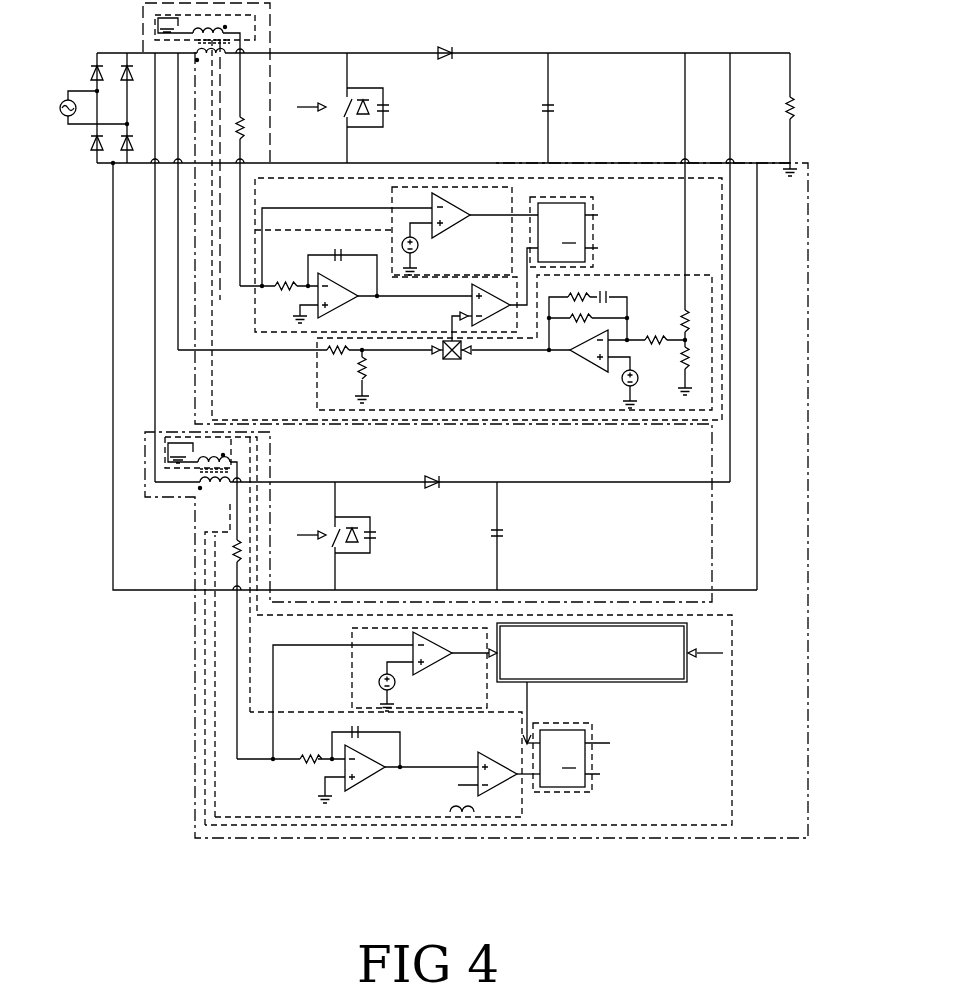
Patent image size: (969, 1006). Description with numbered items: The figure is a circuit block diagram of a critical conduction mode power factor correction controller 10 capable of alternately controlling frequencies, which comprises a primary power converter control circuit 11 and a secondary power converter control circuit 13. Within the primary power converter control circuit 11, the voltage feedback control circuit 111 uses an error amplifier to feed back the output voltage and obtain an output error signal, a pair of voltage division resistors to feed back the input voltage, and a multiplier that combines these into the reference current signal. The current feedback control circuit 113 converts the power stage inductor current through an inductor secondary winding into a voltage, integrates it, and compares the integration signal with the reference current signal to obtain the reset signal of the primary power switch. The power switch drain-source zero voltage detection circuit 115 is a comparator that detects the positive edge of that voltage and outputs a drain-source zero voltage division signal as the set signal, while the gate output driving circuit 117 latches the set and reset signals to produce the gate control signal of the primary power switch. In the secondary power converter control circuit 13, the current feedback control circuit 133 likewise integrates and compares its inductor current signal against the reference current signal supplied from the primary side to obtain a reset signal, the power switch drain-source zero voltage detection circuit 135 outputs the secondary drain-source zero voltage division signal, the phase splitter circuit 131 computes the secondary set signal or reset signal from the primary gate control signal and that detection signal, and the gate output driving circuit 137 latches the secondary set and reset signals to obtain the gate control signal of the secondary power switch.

The critical conduction mode power factor correction controller 10 is at (265, 838).
The primary power converter control circuit 11 is at (481, 230).
The secondary power converter control circuit 13 is at (506, 662).
The voltage feedback control circuit 111 is at (315, 397).
The current feedback control circuit 113 is at (255, 193).
The power switch drain-source zero voltage detection circuit 115 is at (392, 193).
The gate output driving circuit 117 is at (595, 232).
The phase splitter circuit 131 is at (587, 682).
The current feedback control circuit 133 is at (308, 712).
The power switch drain-source zero voltage detection circuit 135 is at (350, 673).
The gate output driving circuit 137 is at (592, 792).